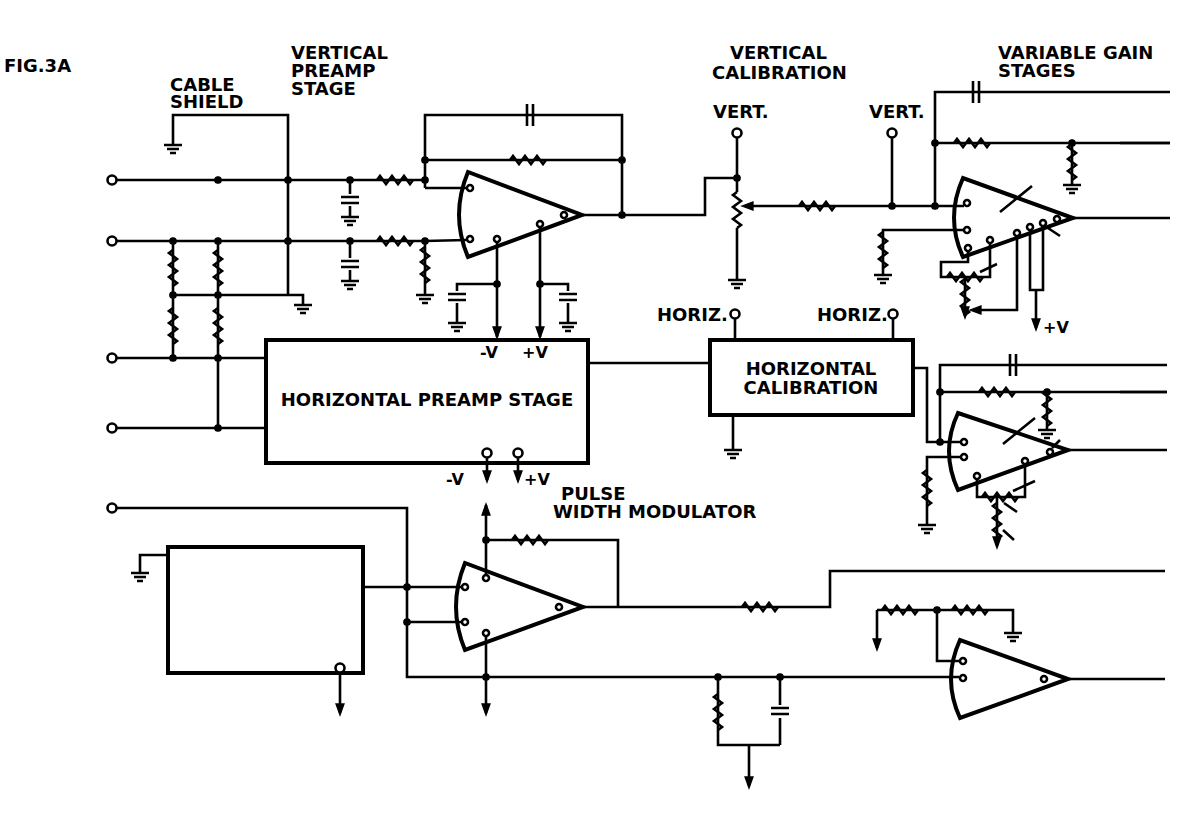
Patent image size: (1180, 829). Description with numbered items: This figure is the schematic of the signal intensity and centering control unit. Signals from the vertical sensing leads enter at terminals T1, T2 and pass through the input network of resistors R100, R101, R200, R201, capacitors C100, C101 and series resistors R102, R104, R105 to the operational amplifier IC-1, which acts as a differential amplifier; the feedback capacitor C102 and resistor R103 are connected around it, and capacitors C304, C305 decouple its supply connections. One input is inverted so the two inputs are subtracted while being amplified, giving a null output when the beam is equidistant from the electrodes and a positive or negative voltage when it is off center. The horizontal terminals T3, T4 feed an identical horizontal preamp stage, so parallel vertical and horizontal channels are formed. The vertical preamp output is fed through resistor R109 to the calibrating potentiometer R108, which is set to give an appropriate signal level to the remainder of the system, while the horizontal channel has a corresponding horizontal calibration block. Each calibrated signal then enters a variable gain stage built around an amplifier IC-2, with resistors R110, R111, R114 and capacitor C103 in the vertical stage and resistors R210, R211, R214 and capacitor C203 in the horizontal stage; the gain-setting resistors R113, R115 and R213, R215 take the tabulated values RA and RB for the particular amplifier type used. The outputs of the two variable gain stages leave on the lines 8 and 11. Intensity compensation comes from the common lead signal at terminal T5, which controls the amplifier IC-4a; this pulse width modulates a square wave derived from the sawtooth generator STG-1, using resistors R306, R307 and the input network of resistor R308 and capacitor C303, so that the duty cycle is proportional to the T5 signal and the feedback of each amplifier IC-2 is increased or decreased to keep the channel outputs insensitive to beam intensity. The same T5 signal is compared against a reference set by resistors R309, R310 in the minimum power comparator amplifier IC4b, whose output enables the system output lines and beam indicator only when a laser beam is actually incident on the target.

The terminal T1 is at (265, 183).
The terminal T2 is at (265, 243).
The horizontal terminal T3 is at (165, 360).
The horizontal terminal T4 is at (165, 430).
The common terminal T5 is at (511, 587).
The resistor R100 is at (143, 268).
The resistor R101 is at (247, 268).
The resistor R200 is at (142, 326).
The resistor R201 is at (247, 361).
The capacitor C100 is at (333, 202).
The capacitor C101 is at (333, 267).
The resistor R102 is at (387, 164).
The resistor R104 is at (387, 229).
The resistor R105 is at (400, 272).
The capacitor C102 is at (523, 150).
The resistor R103 is at (523, 175).
The operational amplifier IC-1 is at (546, 228).
The capacitor C305 is at (471, 290).
The capacitor C304 is at (566, 282).
The calibrating potentiometer R108 is at (764, 209).
The resistor R109 is at (822, 193).
The resistor R114 is at (893, 256).
The capacitor C103 is at (1031, 136).
The resistor R110 is at (1051, 130).
The resistor R111 is at (1099, 166).
The output line 8 is at (1145, 134).
The output line 11 is at (1143, 382).
The amplifier IC-2 is at (1056, 334).
The resistor R113 is at (982, 271).
The resistor R115 is at (942, 306).
The resistance value RA is at (1008, 386).
The resistance value RB is at (1002, 395).
The capacitor C203 is at (1040, 394).
The resistor R210 is at (1052, 383).
The resistor R211 is at (1073, 413).
The resistor R214 is at (913, 495).
The resistor R213 is at (1031, 482).
The resistor R215 is at (969, 529).
The saw tooth generator STG-1 is at (297, 633).
The resistor R306 is at (529, 555).
The amplifier IC-4a is at (496, 584).
The resistor R307 is at (874, 591).
The resistor R308 is at (718, 731).
The capacitor C303 is at (808, 709).
The resistor R309 is at (888, 622).
The resistor R310 is at (978, 622).
The comparator amplifier IC4b is at (1002, 673).